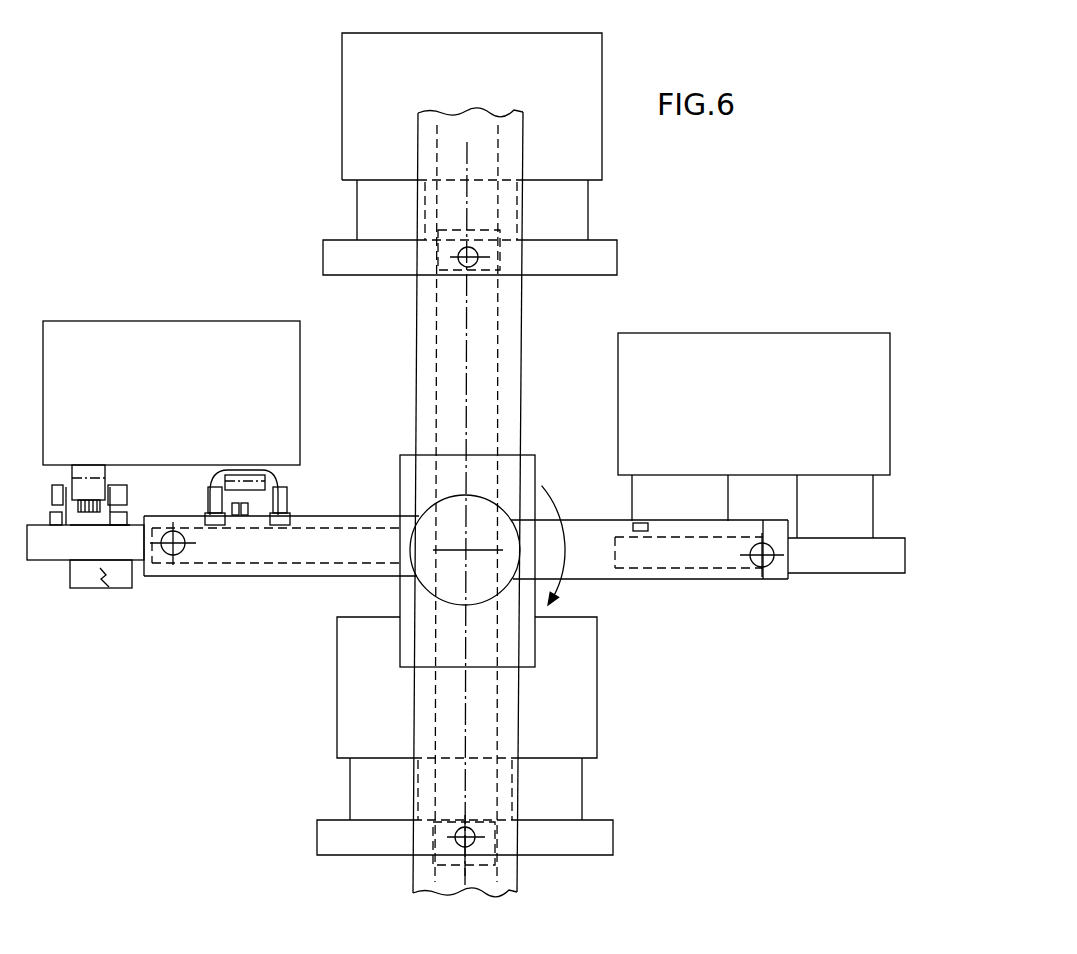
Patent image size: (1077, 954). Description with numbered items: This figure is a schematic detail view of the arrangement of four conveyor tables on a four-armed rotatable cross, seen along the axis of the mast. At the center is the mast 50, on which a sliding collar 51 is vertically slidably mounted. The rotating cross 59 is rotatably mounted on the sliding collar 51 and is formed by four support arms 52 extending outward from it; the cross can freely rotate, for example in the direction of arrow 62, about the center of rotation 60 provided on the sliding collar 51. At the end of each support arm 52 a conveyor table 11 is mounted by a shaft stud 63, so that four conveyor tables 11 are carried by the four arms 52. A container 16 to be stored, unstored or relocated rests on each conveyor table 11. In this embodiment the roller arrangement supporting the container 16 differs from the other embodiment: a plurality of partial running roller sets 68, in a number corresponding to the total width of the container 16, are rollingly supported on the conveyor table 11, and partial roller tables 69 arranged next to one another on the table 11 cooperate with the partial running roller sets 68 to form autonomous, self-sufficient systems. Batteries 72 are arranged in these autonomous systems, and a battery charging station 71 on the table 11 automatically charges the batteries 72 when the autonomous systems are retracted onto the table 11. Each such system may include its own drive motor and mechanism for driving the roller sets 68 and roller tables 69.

The conveyor table 11 is at (605, 252).
The container 16 is at (454, 45).
The mast 50 is at (502, 884).
The sliding collar 51 is at (403, 484).
The support arm 52 is at (492, 298).
The rotating cross 59 is at (510, 514).
The center of rotation 60 is at (465, 550).
The direction of rotation arrow 62 is at (572, 549).
The shaft stud 63 is at (460, 250).
The partial running roller set 68 is at (273, 467).
The partial roller table 69 is at (83, 527).
The battery charging station 71 is at (115, 575).
The battery 72 is at (80, 527).